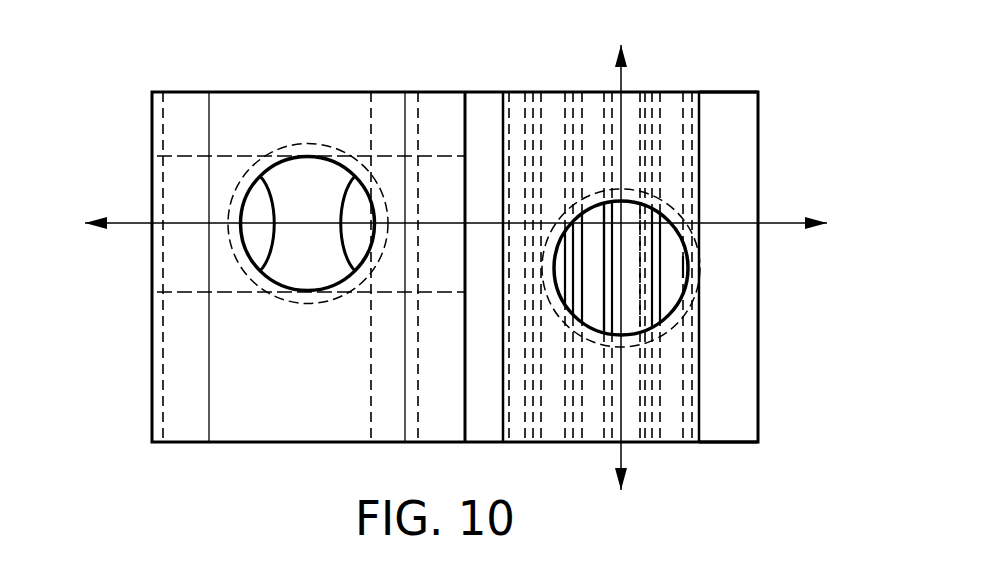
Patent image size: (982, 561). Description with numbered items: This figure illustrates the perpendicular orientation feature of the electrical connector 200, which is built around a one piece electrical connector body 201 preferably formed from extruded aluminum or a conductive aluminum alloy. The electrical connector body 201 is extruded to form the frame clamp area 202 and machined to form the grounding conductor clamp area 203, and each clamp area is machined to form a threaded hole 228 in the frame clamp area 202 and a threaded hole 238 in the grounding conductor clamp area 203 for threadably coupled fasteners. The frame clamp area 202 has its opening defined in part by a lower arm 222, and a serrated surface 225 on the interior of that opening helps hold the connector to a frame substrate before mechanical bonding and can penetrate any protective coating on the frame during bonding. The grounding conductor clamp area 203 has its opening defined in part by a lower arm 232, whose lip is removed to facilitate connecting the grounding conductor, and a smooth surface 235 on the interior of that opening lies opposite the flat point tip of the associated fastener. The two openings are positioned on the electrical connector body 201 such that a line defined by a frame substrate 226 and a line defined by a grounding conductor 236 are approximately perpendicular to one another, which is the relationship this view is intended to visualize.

The electrical connector 200 is at (760, 462).
The electrical connector body 201 is at (492, 90).
The frame clamp area 202 is at (684, 90).
The grounding conductor clamp area 203 is at (307, 444).
The lower arm 222 is at (733, 357).
The serrated surface 225 is at (607, 290).
The line defined by a frame substrate 226 is at (623, 72).
The threaded hole 228 is at (628, 290).
The lower arm 232 is at (182, 352).
The smooth surface 235 is at (308, 197).
The line defined by a grounding conductor 236 is at (784, 227).
The threaded hole 238 is at (302, 253).